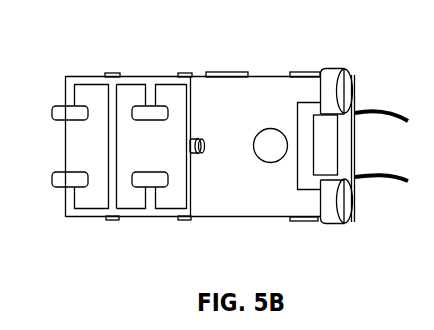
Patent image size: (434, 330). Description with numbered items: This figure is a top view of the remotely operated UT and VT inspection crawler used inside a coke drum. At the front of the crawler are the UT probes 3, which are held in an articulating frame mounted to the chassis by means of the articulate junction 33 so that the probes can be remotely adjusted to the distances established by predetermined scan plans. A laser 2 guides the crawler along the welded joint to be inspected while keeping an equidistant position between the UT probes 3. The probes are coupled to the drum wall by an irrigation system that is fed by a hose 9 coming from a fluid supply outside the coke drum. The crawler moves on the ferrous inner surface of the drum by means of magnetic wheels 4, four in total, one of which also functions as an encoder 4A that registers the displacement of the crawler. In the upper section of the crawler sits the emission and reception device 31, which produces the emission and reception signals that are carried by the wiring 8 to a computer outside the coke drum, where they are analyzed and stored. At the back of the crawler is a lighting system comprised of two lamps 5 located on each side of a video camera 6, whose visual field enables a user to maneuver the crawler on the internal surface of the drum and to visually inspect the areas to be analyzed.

The laser 2 is at (204, 143).
The UT probes 3 is at (68, 124).
The magnetic wheels 4 is at (228, 71).
The encoder 4A is at (312, 226).
The lamps 5 is at (318, 90).
The video camera 6 is at (339, 138).
The wiring 8 is at (407, 112).
The hose 9 is at (408, 175).
The emission and reception device 31 is at (295, 173).
The articulate junction 33 is at (115, 72).